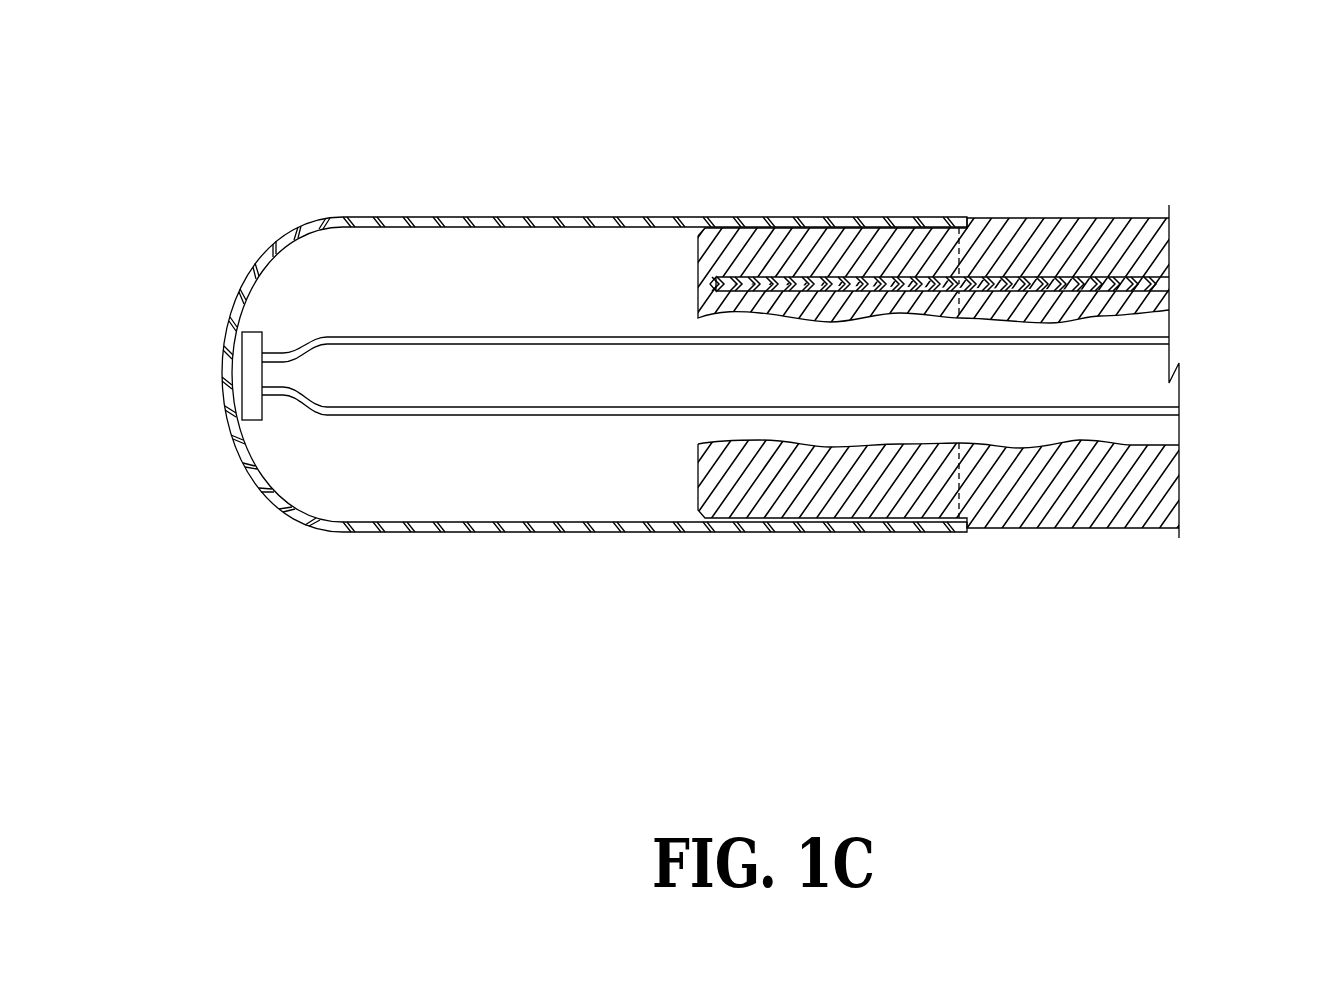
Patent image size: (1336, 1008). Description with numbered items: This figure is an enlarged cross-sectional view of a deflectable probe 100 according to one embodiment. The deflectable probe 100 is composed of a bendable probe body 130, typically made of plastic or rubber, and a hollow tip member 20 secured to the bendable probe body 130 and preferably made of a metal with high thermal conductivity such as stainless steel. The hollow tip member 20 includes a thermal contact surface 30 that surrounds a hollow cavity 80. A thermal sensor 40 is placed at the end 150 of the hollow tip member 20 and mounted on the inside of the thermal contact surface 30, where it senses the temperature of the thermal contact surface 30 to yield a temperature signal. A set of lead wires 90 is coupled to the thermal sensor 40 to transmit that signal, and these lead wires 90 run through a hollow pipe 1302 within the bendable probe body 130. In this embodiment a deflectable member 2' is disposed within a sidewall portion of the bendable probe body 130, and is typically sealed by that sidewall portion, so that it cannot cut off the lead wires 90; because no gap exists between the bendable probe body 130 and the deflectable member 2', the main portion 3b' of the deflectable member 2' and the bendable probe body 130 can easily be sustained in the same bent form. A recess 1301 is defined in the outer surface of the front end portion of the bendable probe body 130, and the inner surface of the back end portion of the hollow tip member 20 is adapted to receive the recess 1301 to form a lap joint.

The deflectable probe 100 is at (1030, 772).
The hollow tip member 20 is at (409, 212).
The thermal contact surface 30 is at (482, 527).
The thermal sensor 40 is at (255, 468).
The hollow cavity 80 is at (565, 380).
The lead wires 90 is at (520, 408).
The bendable probe body 130 is at (1037, 213).
The recess 1301 is at (783, 527).
The hollow pipe 1302 is at (790, 312).
The end of the hollow tip member 150 is at (255, 266).
The main portion of the deflectable member 3b' is at (1124, 188).
The deflectable member 2' is at (1226, 268).